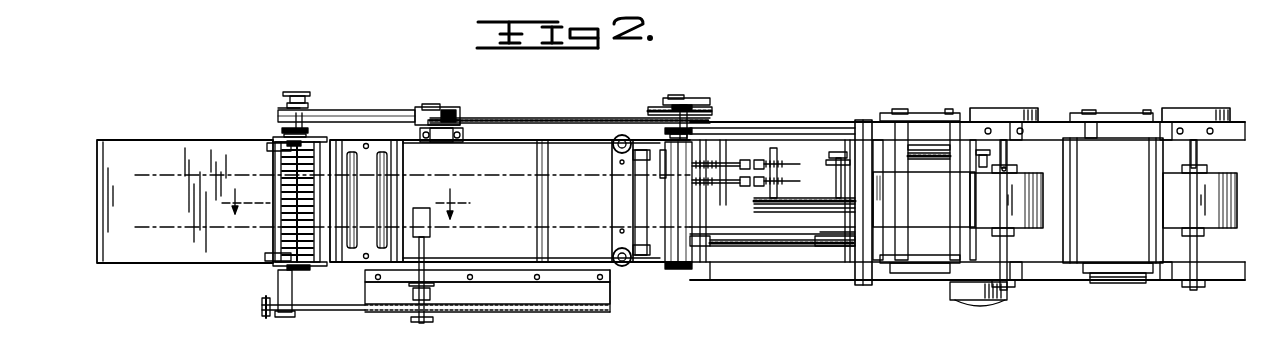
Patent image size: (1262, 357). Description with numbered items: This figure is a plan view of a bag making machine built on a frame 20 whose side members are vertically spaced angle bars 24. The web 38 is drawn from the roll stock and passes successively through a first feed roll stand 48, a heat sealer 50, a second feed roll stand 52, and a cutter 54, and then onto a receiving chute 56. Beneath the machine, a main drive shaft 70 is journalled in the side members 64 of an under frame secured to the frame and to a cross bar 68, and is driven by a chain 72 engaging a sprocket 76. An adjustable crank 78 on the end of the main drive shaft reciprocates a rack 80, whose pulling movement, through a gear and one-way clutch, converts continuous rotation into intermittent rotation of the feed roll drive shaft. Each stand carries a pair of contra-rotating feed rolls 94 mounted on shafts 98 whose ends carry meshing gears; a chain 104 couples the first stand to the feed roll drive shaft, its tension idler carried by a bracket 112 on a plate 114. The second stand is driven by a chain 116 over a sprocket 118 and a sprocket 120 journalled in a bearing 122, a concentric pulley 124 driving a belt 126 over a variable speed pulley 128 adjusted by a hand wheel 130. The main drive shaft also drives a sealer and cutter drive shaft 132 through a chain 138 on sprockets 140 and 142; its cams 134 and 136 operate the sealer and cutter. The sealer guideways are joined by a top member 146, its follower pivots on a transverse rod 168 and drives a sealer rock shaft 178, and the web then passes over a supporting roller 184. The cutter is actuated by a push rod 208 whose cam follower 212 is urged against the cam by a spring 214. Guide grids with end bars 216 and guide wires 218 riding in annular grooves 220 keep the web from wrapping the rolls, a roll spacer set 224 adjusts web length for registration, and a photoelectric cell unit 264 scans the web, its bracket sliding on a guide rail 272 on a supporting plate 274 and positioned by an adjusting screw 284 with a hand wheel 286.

The frame 20 is at (787, 286).
The angle bars 24 is at (800, 126).
The web 38 is at (935, 255).
The first feed roll stand 48 is at (703, 266).
The heat sealer 50 is at (625, 268).
The second feed roll stand 52 is at (322, 268).
The cutter 54 is at (262, 233).
The receiving chute 56 is at (168, 262).
The side members of under frame 64 is at (815, 136).
The cross bar 68 is at (928, 168).
The main drive shaft 70 is at (835, 185).
The chain 72 is at (940, 152).
The sprocket 76 is at (850, 120).
The adjustable crank 78 is at (818, 250).
The rack 80 is at (757, 250).
The feed rolls 94 is at (692, 190).
The shafts 98 is at (308, 124).
The chain 104 is at (690, 97).
The bracket 112 is at (680, 104).
The plate 114 is at (660, 108).
The chain 116 is at (548, 118).
The sprocket 118 is at (690, 112).
The sprocket 120 is at (414, 116).
The bearing 122 is at (452, 142).
The pulley 124 is at (455, 110).
The belt 126 is at (362, 110).
The variable speed pulley 128 is at (286, 104).
The hand wheel 130 is at (296, 91).
The sealer and cutter drive shaft 132 is at (775, 147).
The cam 134 is at (785, 163).
The cam 136 is at (786, 180).
The chain 138 is at (782, 205).
The sprocket 140 is at (872, 186).
The sprocket 142 is at (756, 205).
The top member 146 is at (613, 198).
The transverse rod 168 is at (730, 140).
The sealer rock shaft 178 is at (637, 210).
The transverse supporting roller 184 is at (536, 243).
The push rod 208 is at (497, 182).
The cam follower 212 is at (730, 190).
The coil compression spring 214 is at (728, 156).
The end bars 216 is at (335, 268).
The guide wires 218 is at (283, 168).
The annular grooves 220 is at (288, 233).
The roll spacer set 224 is at (407, 166).
The photoelectric cell unit 264 is at (434, 240).
The guide rail 272 is at (595, 292).
The supporting plate 274 is at (505, 278).
The adjusting screw 284 is at (300, 311).
The hand wheel 286 is at (263, 312).